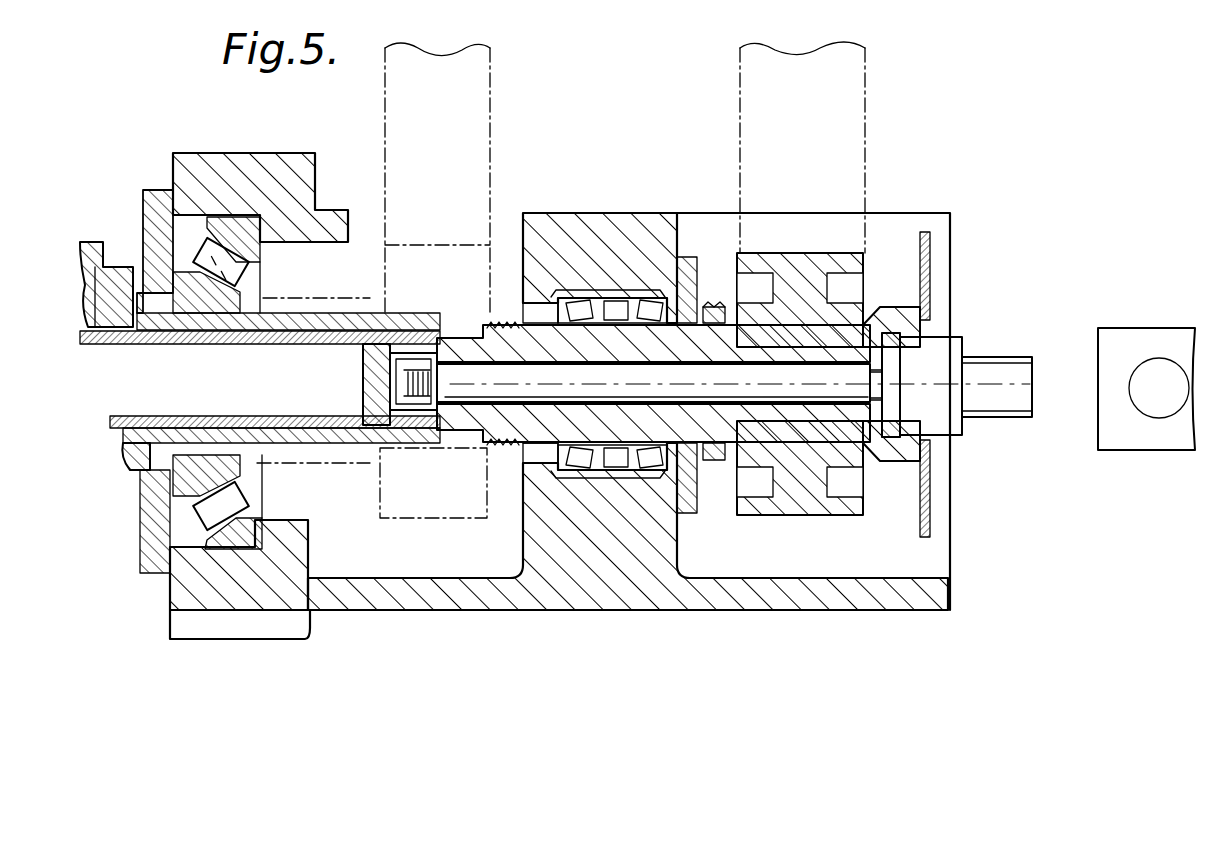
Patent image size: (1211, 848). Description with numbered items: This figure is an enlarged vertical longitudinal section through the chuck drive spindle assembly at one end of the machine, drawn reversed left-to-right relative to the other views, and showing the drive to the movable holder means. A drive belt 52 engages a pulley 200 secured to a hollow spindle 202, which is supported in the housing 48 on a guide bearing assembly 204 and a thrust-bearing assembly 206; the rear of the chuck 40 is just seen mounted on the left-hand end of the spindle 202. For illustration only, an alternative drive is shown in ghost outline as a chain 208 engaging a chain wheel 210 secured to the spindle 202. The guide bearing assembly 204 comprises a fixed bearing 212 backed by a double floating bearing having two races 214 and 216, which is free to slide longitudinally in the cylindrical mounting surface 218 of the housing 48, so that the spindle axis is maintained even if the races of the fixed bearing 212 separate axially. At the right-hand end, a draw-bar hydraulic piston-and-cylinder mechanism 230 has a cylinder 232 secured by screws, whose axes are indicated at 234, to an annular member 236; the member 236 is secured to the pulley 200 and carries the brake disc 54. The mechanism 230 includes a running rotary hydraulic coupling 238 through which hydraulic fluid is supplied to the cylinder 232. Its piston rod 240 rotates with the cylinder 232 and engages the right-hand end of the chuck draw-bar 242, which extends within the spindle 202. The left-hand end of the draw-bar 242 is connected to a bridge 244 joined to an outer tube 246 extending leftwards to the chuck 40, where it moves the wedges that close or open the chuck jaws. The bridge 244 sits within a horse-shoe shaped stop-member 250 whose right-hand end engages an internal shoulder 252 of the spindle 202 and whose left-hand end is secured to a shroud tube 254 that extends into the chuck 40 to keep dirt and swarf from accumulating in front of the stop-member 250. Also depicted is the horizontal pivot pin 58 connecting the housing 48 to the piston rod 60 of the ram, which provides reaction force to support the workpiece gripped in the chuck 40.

The chuck 40 is at (108, 265).
The housing 48 is at (532, 532).
The drive belt 52 is at (855, 168).
The brake disc 54 is at (930, 531).
The horizontal pivot pin 58 is at (1157, 367).
The piston rod 60 is at (1163, 441).
The pulley 200 is at (783, 611).
The hollow spindle 202 is at (783, 380).
The guide bearing assembly 204 is at (609, 292).
The thrust-bearing assembly 206 is at (247, 279).
The chain 208 is at (445, 186).
The chain wheel 210 is at (428, 524).
The fixed bearing 212 is at (545, 304).
The race 214 is at (597, 300).
The race 216 is at (718, 338).
The cylindrical mounting surface 218 is at (708, 458).
The draw-bar hydraulic piston-and-cylinder mechanism 230 is at (965, 332).
The cylinder 232 is at (942, 362).
The screw axes 234 is at (935, 346).
The annular member 236 is at (895, 466).
The running rotary hydraulic coupling 238 is at (1016, 404).
The piston rod 240 is at (882, 386).
The chuck draw-bar 242 is at (884, 340).
The bridge 244 is at (392, 446).
The outer tube 246 is at (372, 350).
The stop-member 250 is at (386, 380).
The internal shoulder 252 is at (405, 406).
The shroud tube 254 is at (330, 341).